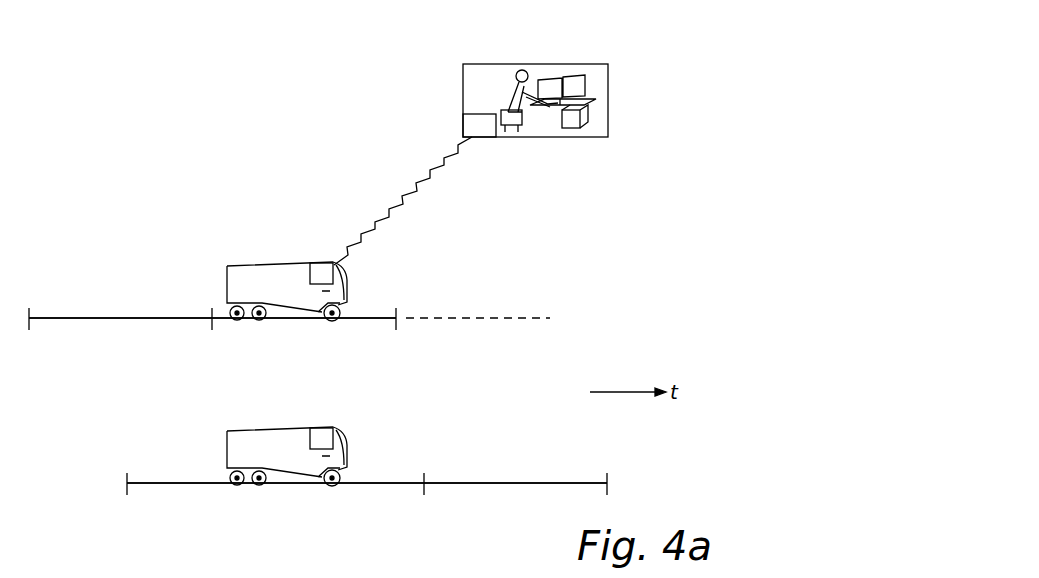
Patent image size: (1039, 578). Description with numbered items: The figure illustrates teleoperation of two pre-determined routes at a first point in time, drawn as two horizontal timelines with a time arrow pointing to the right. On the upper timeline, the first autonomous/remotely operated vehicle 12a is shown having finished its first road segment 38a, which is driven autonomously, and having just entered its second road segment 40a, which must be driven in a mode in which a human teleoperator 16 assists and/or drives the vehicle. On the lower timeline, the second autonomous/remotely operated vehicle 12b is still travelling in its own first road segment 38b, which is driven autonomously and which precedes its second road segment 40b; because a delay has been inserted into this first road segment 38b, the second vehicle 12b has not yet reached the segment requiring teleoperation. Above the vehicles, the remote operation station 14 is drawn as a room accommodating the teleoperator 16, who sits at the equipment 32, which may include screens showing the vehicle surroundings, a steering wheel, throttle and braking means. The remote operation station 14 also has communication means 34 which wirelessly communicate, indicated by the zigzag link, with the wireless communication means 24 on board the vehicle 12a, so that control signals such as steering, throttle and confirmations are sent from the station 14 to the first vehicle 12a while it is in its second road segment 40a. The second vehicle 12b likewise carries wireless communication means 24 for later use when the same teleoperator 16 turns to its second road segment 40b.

The first autonomous/remotely operated vehicle 12a is at (343, 290).
The second autonomous/remotely operated vehicle 12b is at (345, 455).
The remote operation station 14 is at (514, 110).
The teleoperator 16 is at (516, 72).
The wireless communication means 24 is at (320, 270).
The equipment 32 is at (572, 128).
The communication means 34 is at (462, 120).
The first road segment 38a is at (107, 318).
The first road segment 38b is at (183, 483).
The second road segment 40a is at (365, 318).
The second road segment 40b is at (480, 483).